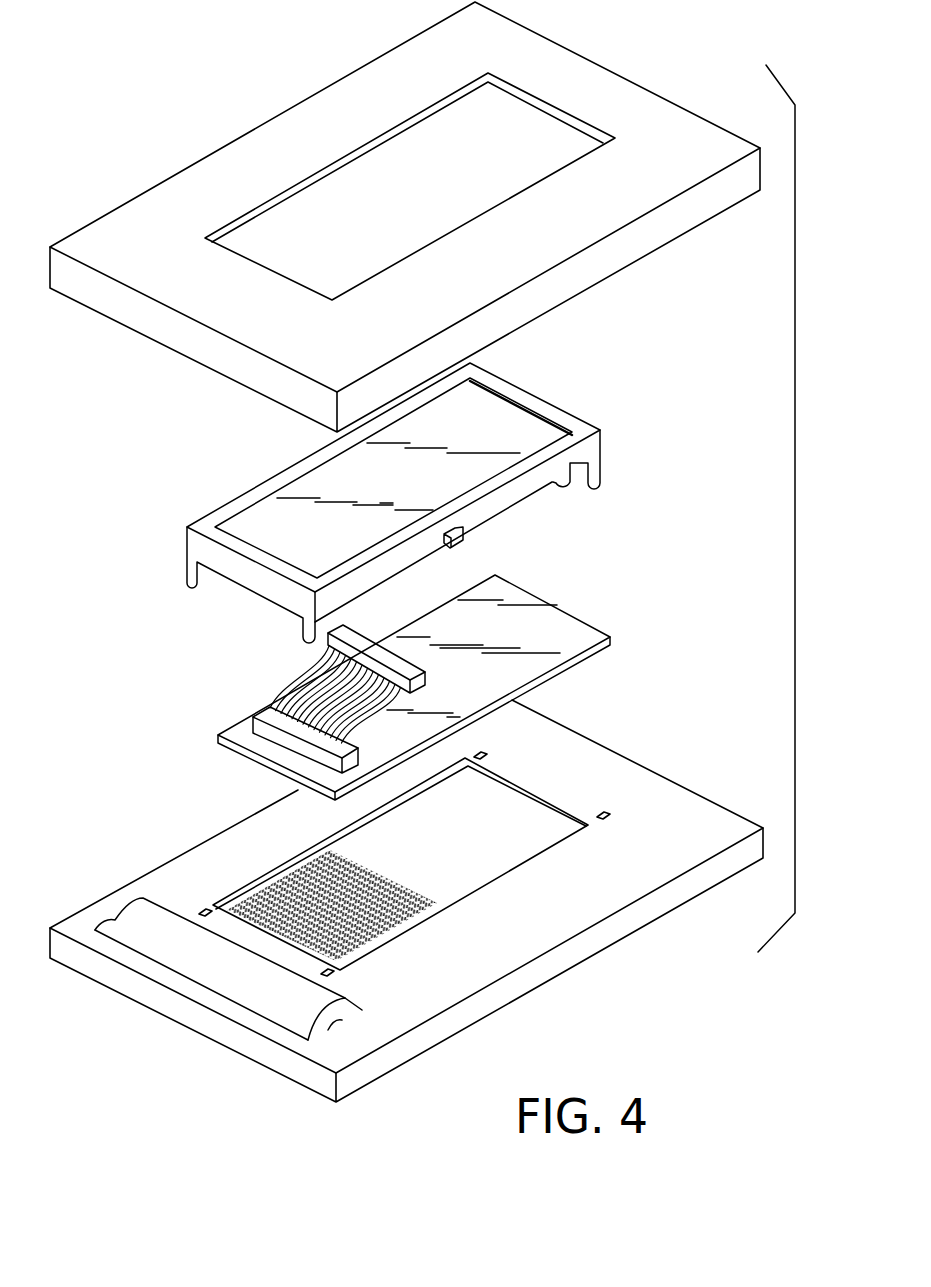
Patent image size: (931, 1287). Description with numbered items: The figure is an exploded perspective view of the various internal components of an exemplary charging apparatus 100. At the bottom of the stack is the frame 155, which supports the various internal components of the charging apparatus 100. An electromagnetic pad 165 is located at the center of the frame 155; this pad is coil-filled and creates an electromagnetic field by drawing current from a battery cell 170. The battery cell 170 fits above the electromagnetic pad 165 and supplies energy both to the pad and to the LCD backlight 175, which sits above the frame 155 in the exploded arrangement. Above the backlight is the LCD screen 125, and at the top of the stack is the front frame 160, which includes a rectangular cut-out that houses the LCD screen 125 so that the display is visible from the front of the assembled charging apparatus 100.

The charging apparatus 100 is at (207, 35).
The front frame 160 is at (152, 213).
The LCD screen 125 is at (268, 515).
The LCD backlight 175 is at (575, 621).
The frame 155 is at (615, 770).
The electromagnetic pad 165 is at (290, 893).
The battery cell 170 is at (142, 918).